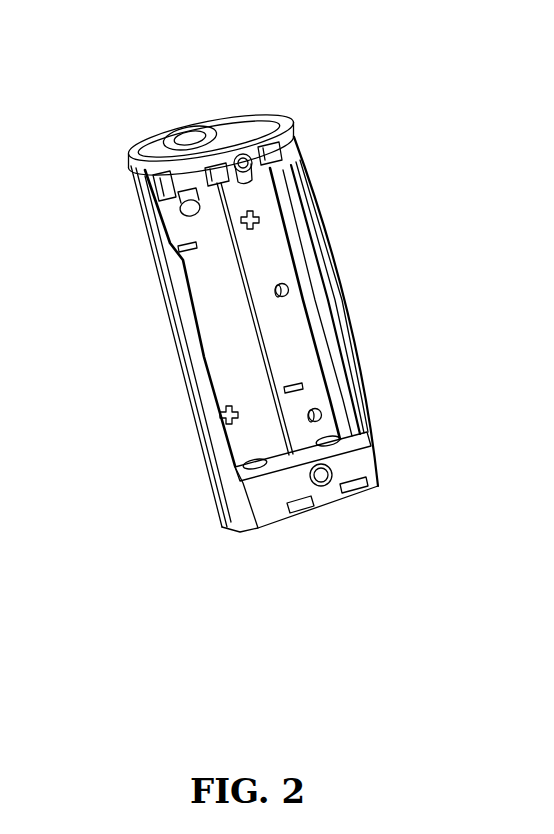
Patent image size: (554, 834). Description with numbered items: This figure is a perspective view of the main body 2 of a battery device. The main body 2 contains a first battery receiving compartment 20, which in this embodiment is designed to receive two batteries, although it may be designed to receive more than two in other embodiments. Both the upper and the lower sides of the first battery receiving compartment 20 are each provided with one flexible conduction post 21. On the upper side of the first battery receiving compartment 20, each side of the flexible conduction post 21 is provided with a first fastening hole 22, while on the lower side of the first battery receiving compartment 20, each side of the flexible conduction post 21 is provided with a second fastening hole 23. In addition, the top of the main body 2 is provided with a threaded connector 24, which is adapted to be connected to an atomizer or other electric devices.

The main body 2 is at (342, 297).
The first battery receiving compartment 20 is at (227, 335).
The flexible conduction post 21 is at (250, 147).
The first fastening hole 22 is at (205, 186).
The second fastening hole 23 is at (300, 505).
The threaded connector 24 is at (188, 127).